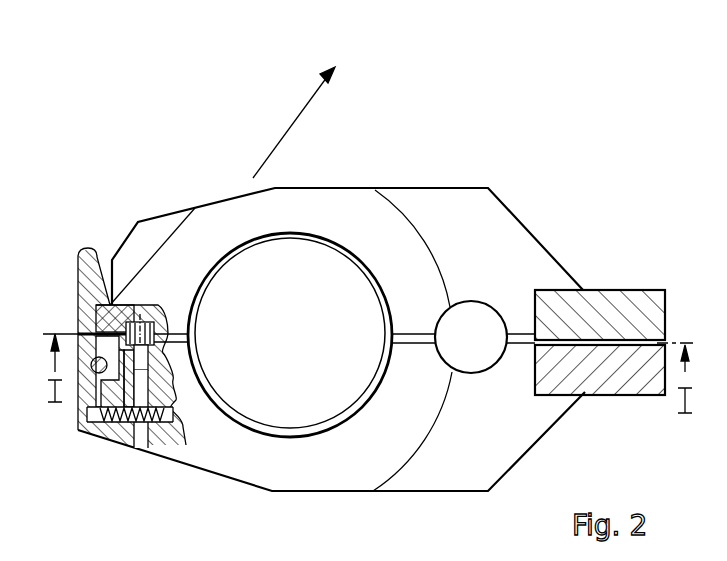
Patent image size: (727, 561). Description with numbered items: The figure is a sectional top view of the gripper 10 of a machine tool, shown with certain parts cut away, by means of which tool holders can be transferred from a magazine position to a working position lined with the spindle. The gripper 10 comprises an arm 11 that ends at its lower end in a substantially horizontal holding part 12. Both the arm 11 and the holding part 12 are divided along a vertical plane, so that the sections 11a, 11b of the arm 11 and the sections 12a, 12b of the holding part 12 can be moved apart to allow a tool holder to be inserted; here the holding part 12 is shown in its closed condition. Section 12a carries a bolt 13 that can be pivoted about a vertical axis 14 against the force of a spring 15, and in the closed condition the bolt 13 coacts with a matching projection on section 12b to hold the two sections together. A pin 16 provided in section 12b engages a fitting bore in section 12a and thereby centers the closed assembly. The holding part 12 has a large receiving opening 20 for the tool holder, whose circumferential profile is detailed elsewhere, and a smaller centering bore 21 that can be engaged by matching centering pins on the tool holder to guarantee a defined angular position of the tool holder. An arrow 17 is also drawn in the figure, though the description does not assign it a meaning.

The gripper 10 is at (342, 290).
The arm 11 is at (608, 306).
The section of the arm 11a is at (620, 392).
The section of the arm 11b is at (632, 305).
The holding part 12 is at (537, 213).
The section of the holding part 12a is at (380, 468).
The section of the holding part 12b is at (362, 220).
The bolt 13 is at (88, 272).
The vertical axis 14 is at (93, 358).
The spring 15 is at (113, 424).
The pin 16 is at (134, 312).
The direction of movement arrow 17 is at (288, 127).
The receiving opening 20 is at (264, 436).
The centering bore 21 is at (466, 374).